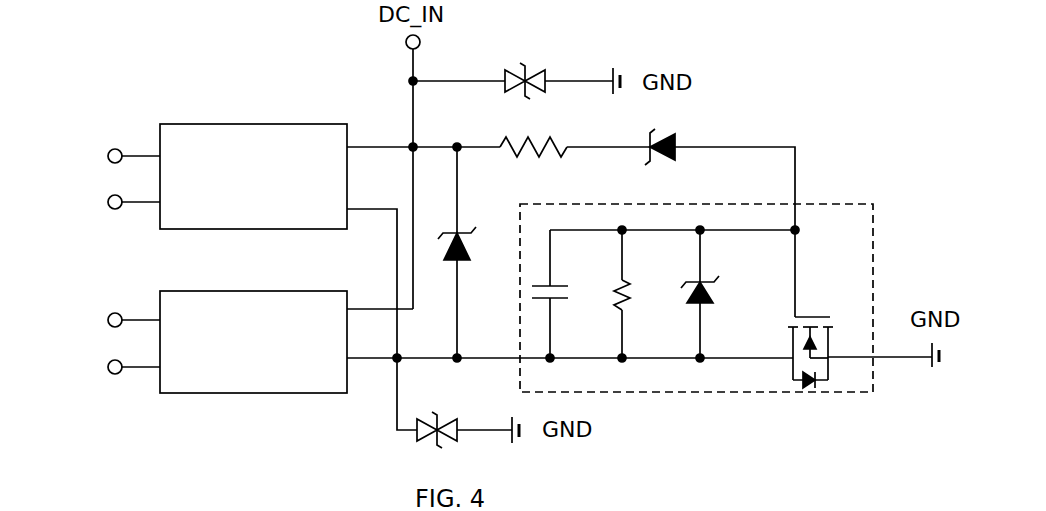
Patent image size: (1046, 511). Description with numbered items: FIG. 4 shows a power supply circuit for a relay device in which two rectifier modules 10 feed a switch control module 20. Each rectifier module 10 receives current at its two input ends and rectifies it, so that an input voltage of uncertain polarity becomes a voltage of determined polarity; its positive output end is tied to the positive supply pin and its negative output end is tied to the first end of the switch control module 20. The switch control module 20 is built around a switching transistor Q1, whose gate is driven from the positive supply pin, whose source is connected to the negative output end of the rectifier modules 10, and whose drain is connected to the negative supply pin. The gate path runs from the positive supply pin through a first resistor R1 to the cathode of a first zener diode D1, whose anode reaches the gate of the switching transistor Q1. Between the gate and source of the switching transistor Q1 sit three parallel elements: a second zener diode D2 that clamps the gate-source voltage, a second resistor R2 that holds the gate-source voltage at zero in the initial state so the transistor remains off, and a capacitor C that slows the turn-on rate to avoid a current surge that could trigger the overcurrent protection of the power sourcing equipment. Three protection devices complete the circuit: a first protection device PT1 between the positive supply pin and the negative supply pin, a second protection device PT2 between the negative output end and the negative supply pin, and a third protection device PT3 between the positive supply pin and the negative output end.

The rectifier module 10 is at (221, 258).
The switch control module 20 is at (696, 298).
The first protection device PT1 is at (513, 69).
The second protection device PT2 is at (464, 419).
The third protection device PT3 is at (466, 252).
The first resistor R1 is at (533, 157).
The first zener diode D1 is at (661, 158).
The capacitor C is at (559, 294).
The second resistor R2 is at (638, 294).
The second zener diode D2 is at (715, 294).
The switching transistor Q1 is at (810, 309).